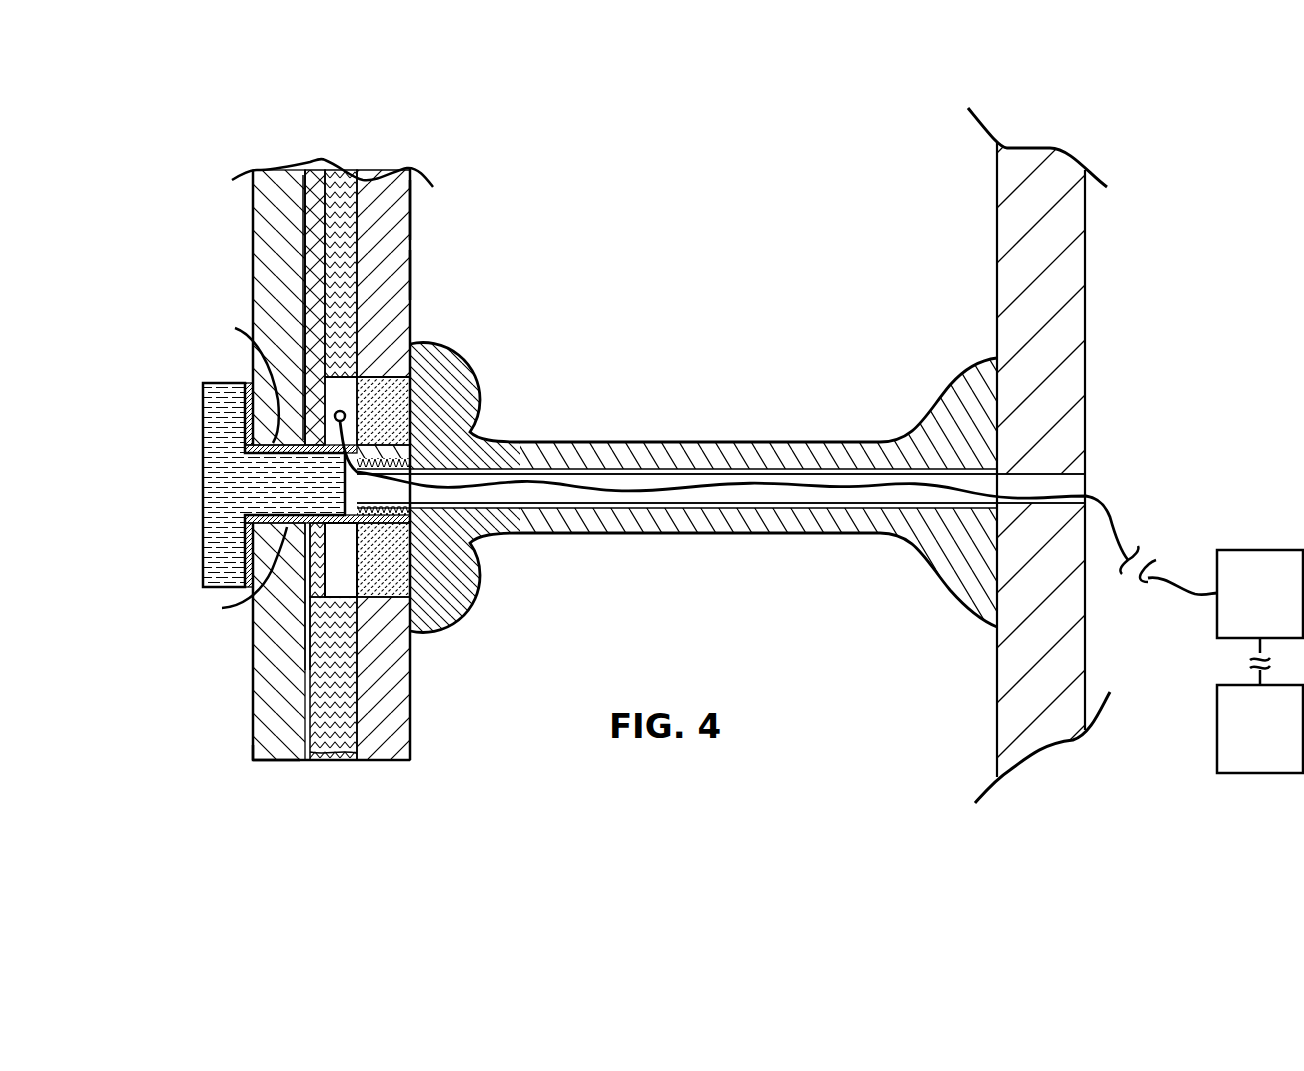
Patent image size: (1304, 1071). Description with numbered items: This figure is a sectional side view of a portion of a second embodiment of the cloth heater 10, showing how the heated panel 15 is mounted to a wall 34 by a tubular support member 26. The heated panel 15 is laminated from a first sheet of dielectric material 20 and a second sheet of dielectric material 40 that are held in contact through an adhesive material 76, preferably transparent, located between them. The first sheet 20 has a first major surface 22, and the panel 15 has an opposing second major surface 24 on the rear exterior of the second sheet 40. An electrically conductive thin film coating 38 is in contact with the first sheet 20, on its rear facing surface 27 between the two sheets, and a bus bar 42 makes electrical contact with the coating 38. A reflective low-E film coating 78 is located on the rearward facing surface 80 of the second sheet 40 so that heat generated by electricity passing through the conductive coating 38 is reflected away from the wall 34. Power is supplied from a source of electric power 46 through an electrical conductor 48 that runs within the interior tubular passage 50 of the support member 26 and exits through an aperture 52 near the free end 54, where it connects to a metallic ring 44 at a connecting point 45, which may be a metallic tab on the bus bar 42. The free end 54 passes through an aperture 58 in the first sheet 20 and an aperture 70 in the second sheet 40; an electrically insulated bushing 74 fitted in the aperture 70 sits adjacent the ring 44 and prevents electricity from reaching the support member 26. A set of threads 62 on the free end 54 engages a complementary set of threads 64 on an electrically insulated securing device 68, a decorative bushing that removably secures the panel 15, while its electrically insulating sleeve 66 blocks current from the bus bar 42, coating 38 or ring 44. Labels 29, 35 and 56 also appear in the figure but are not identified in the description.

The cloth heater 10 is at (820, 148).
The heated panel 15 is at (220, 143).
The first sheet of dielectric material 20 is at (268, 205).
The first major surface 22 is at (253, 732).
The second major surface 24 is at (437, 187).
The support member 26 is at (657, 413).
The rear facing surface 27 is at (312, 727).
The flared end of tube 29 is at (917, 427).
The wall 34 is at (1060, 276).
The probe assembly 35 is at (535, 342).
The electrically conductive thin film coating 38 is at (305, 243).
The second sheet of dielectric material 40 is at (395, 237).
The bus bar 42 is at (318, 168).
The metallic ring 44 is at (337, 392).
The connecting point 45 is at (338, 423).
The source of electric power 46 is at (1260, 705).
The electrical conductor 48 is at (1108, 512).
The interior tubular passage 50 is at (626, 494).
The aperture 52 is at (430, 458).
The free end 54 is at (467, 640).
The signal processor 56 is at (1260, 594).
The aperture 58 is at (236, 465).
The set of threads 62 is at (443, 463).
The complementary set of threads 64 is at (443, 512).
The electrically insulating sleeve 66 is at (248, 383).
The electrically insulated securing device 68 is at (215, 442).
The aperture 70 is at (382, 377).
The electrically insulated bushing 74 is at (412, 383).
The adhesive material 76 is at (343, 183).
The reflective low-E film coating 78 is at (412, 210).
The rearward facing surface 80 is at (410, 272).